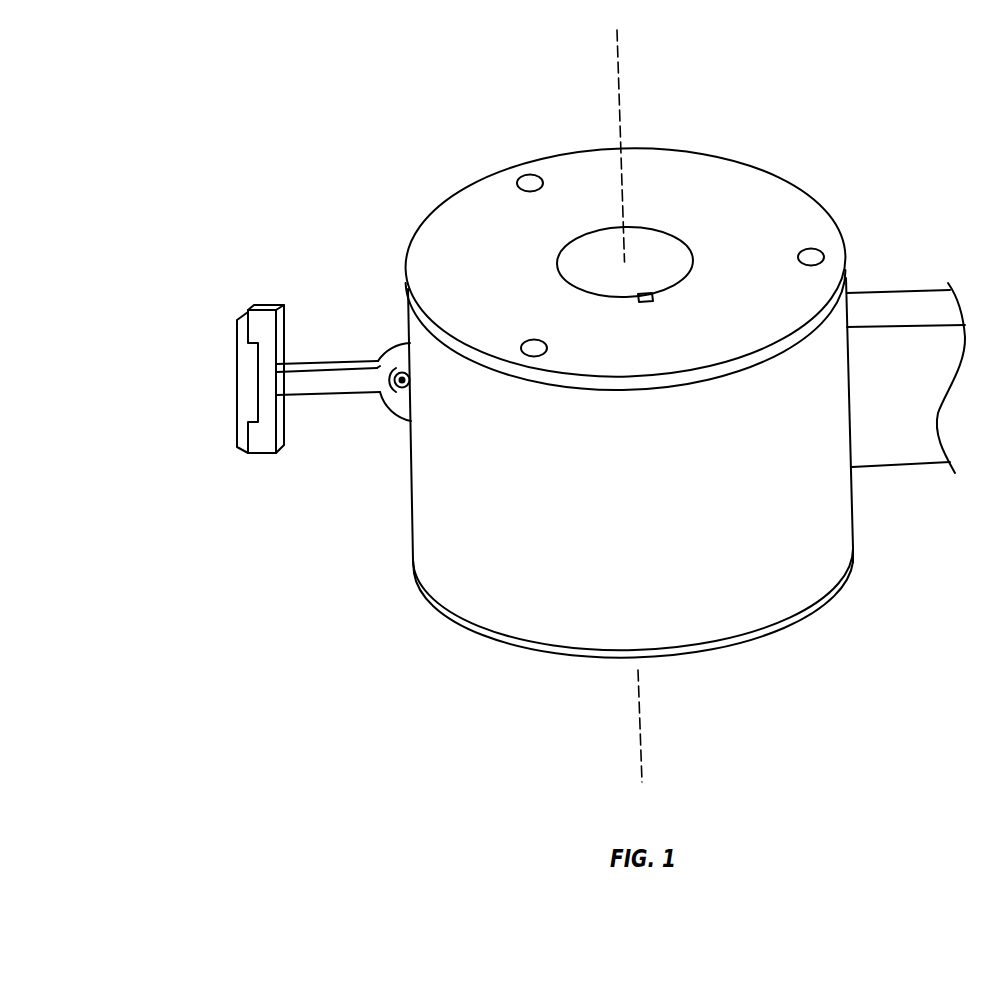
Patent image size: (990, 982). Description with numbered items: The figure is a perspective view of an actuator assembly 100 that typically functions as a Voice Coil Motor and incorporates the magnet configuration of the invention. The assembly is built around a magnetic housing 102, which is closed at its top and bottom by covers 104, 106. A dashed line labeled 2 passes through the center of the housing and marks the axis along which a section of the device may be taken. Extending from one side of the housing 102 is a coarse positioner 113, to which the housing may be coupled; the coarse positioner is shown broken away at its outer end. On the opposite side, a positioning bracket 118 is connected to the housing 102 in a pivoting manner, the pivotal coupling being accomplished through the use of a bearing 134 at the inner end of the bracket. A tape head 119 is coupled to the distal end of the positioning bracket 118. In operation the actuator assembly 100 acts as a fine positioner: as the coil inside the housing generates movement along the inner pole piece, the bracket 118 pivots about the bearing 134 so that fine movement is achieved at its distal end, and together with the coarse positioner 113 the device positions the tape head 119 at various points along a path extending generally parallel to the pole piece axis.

The actuator assembly 100 is at (371, 80).
The section line 2- 2 is at (609, 67).
The magnetic housing 102 is at (413, 517).
The cover 104 is at (657, 157).
The cover 106 is at (751, 638).
The coarse positioner 113 is at (892, 298).
The positioning bracket 118 is at (310, 362).
The tape head 119 is at (237, 384).
The bearing 134 is at (402, 390).